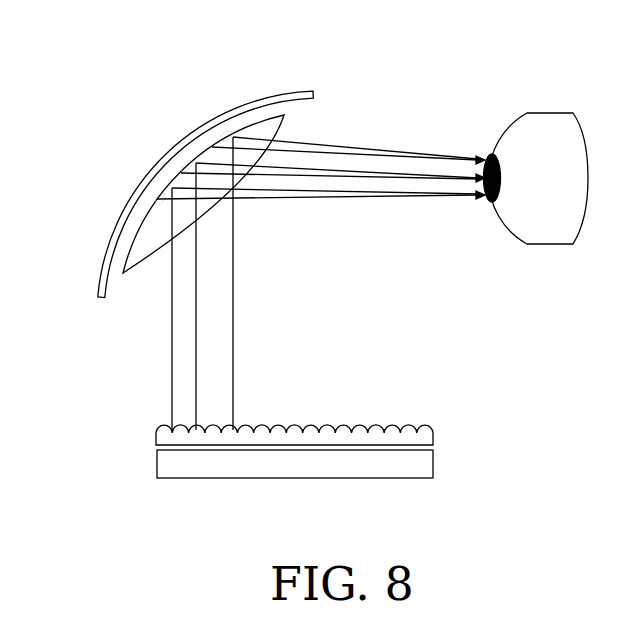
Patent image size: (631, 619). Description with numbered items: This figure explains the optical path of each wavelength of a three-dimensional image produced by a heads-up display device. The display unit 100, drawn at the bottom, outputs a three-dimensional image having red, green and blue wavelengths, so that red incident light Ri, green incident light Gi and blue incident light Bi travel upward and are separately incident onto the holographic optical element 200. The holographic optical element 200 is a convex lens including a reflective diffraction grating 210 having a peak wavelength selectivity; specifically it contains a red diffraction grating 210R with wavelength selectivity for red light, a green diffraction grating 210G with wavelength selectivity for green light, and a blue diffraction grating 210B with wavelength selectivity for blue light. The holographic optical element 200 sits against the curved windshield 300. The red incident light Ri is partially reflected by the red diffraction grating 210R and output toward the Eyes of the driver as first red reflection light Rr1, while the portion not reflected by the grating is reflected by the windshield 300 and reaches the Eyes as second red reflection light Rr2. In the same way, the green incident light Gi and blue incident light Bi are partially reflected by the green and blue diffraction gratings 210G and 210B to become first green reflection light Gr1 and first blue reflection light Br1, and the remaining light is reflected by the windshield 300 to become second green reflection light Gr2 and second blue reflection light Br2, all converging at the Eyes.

The display unit 100 is at (142, 434).
The holographic optical element 200 is at (266, 118).
The reflective diffraction grating 210 is at (96, 117).
The blue diffraction grating 210B is at (220, 137).
The green diffraction grating 210G is at (185, 163).
The red diffraction grating 210R is at (160, 200).
The windshield 300 is at (297, 90).
The blue incident light Bi is at (246, 283).
The green incident light Gi is at (207, 296).
The red incident light Ri is at (159, 309).
The first blue reflection light Br1 is at (367, 149).
The second blue reflection light Br2 is at (408, 155).
The first green reflection light Gr1 is at (282, 176).
The second green reflection light Gr2 is at (327, 171).
The first red reflection light Rr1 is at (415, 199).
The second red reflection light Rr2 is at (363, 198).
The eyes of the driver Eyes is at (540, 112).